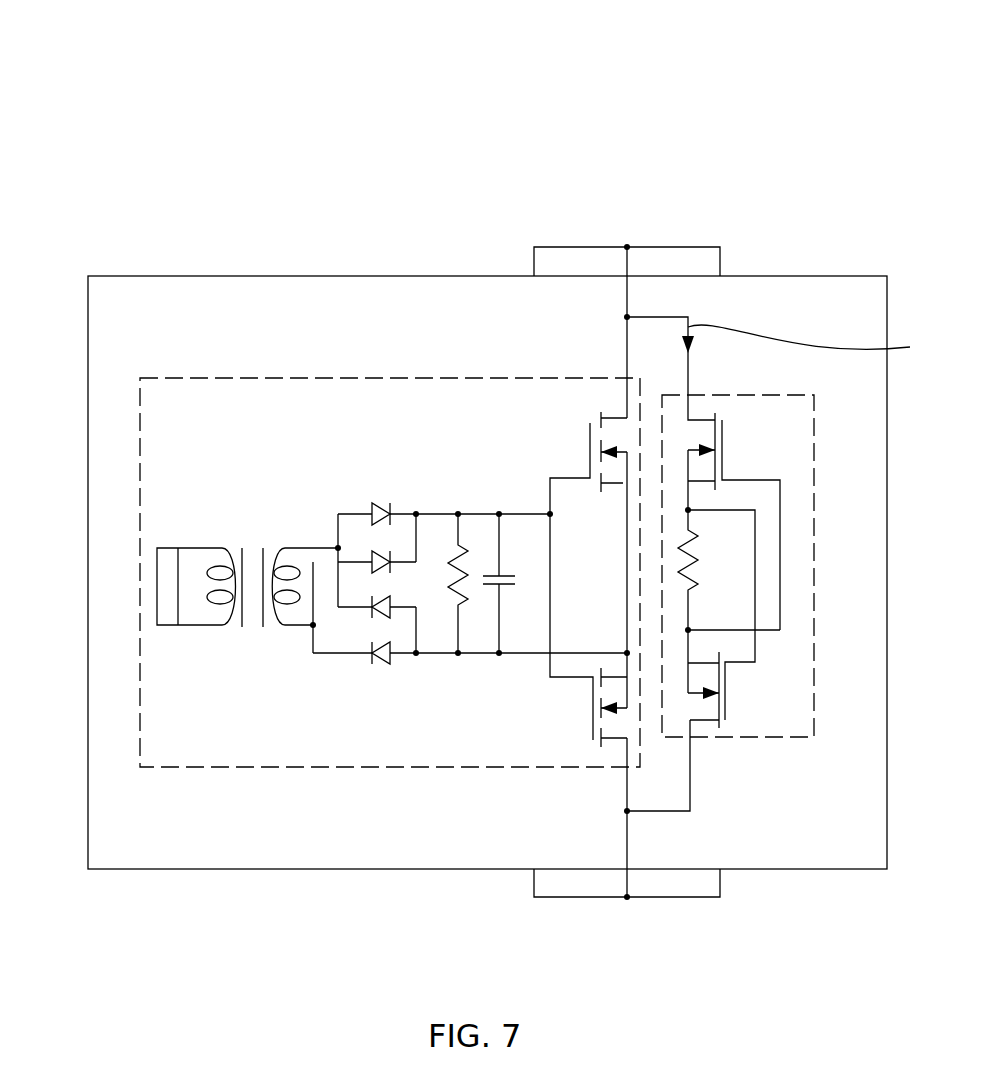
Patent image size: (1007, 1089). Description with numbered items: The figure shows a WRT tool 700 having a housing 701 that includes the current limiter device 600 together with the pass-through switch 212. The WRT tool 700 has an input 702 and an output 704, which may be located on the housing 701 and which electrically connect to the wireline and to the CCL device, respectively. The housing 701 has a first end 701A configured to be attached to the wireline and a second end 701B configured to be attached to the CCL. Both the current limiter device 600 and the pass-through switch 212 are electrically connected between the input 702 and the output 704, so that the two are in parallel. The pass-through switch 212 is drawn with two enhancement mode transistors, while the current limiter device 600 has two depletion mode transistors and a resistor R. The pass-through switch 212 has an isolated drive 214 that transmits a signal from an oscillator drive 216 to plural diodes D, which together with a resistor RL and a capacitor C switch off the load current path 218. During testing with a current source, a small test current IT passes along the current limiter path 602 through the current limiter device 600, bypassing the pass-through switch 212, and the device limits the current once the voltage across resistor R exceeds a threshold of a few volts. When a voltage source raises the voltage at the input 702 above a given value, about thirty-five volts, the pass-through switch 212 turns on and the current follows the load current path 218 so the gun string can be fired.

The WRT tool 700 is at (792, 53).
The housing 701 is at (112, 870).
The first end 701A is at (568, 245).
The second end 701B is at (563, 898).
The input 702 is at (627, 245).
The output 704 is at (627, 900).
The pass-through switch 212 is at (350, 767).
The isolated drive 214 is at (262, 625).
The oscillator drive 216 is at (158, 578).
The load current path 218 is at (627, 407).
The current limiter device 600 is at (814, 565).
The current limiter path 602 is at (688, 408).